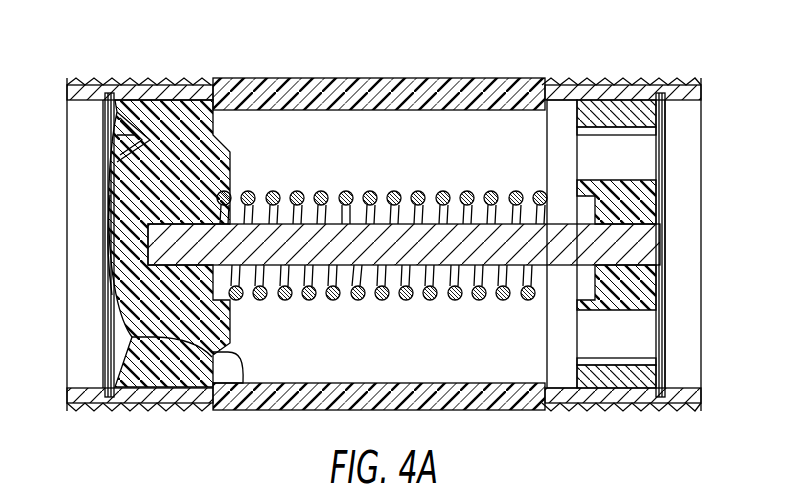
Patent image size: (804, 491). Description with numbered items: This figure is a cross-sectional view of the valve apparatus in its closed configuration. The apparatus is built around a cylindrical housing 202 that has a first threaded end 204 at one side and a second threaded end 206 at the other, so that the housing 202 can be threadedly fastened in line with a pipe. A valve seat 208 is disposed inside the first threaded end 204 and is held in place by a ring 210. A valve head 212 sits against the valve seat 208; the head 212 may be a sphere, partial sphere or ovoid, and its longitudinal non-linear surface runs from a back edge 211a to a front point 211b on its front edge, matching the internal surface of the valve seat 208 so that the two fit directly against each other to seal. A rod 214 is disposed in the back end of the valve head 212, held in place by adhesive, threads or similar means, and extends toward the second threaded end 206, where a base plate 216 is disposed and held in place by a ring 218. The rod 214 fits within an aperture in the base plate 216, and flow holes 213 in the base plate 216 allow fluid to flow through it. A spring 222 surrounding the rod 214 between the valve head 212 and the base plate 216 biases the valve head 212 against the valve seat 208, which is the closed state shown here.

The cylindrical housing 202 is at (330, 92).
The first threaded end 204 is at (93, 88).
The second threaded end 206 is at (597, 88).
The valve seat 208 is at (140, 133).
The ring 210 is at (113, 127).
The back edge 211a is at (243, 357).
The front point 211b is at (107, 245).
The valve head 212 is at (170, 185).
The flow holes 213 is at (625, 150).
The rod 214 is at (452, 240).
The base plate 216 is at (632, 202).
The ring 218 is at (662, 289).
The spring 222 is at (393, 192).